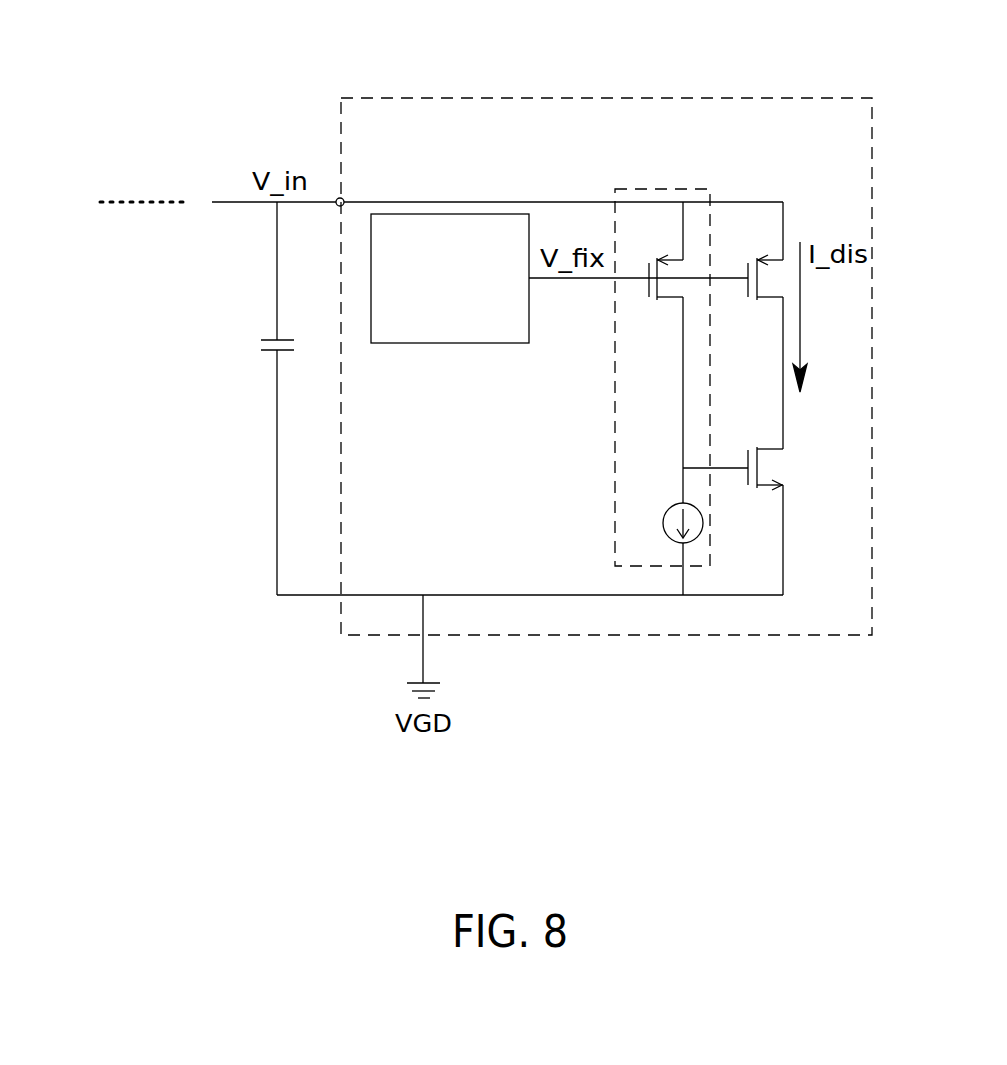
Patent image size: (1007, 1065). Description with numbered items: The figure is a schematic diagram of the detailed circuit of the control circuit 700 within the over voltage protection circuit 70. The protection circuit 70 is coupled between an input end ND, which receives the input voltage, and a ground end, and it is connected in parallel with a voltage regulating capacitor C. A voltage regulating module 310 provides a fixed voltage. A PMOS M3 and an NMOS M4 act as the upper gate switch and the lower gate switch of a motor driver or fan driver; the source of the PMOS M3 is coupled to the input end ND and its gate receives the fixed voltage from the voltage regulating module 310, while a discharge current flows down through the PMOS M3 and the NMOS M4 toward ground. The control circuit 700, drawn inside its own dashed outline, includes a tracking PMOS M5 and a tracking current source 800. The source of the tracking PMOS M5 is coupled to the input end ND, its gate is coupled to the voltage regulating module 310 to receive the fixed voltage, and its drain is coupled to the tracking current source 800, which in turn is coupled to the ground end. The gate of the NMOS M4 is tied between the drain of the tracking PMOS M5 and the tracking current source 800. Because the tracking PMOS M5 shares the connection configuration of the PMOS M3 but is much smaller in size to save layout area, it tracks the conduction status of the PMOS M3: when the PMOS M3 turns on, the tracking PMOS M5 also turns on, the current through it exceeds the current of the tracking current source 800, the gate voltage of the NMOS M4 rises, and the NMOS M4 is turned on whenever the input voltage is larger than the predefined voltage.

The over voltage protection circuit 70 is at (542, 98).
The control circuit 700 is at (669, 189).
The voltage regulating module 310 is at (450, 343).
The tracking current source 800 is at (663, 524).
The input end ND is at (344, 198).
The voltage regulating capacitor C is at (291, 398).
The tracking PMOS M5 is at (665, 304).
The PMOS M3 is at (765, 304).
The NMOS M4 is at (765, 497).